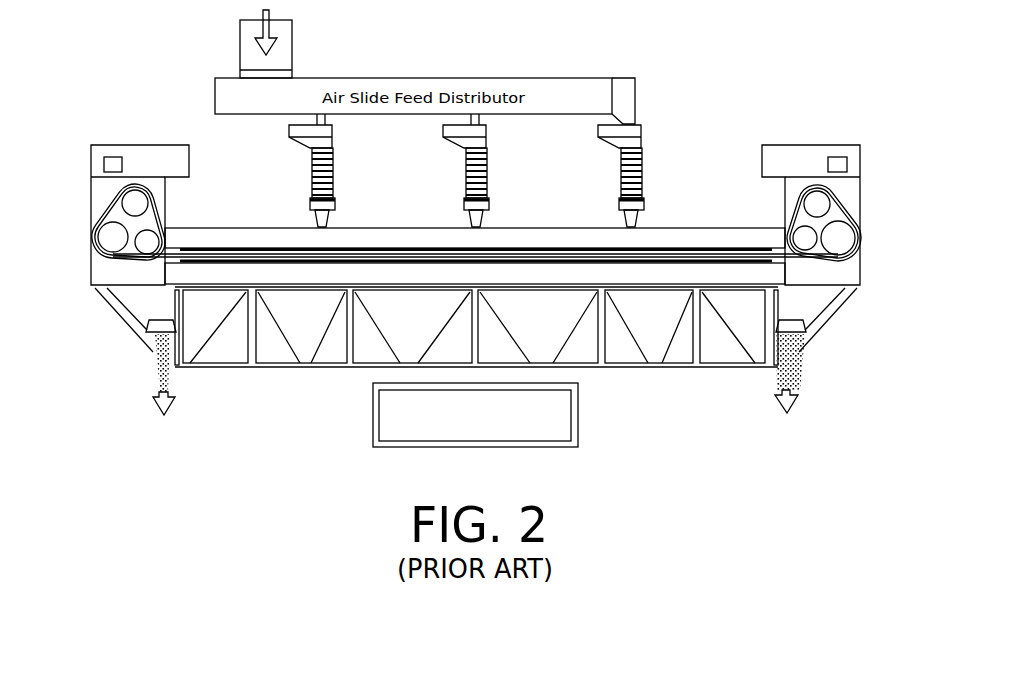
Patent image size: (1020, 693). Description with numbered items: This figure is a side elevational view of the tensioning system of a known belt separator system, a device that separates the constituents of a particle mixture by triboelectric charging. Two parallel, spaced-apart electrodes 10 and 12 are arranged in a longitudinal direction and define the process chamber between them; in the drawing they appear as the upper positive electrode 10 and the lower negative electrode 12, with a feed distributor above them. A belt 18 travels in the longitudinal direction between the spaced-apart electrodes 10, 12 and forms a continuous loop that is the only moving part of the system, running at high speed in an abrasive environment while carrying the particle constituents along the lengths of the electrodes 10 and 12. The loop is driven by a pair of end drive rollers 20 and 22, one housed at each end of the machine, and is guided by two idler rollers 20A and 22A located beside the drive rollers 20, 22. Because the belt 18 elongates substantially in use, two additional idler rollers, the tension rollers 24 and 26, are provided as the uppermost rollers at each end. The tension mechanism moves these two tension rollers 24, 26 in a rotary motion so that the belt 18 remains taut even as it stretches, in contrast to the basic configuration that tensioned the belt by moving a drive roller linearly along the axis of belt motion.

The electrode 10 is at (665, 235).
The electrode 12 is at (670, 272).
The belt 18 is at (254, 253).
The drive roller 20 is at (108, 242).
The idler roller 20A is at (145, 245).
The drive roller 22 is at (842, 240).
The idler roller 22A is at (807, 238).
The tension roller 24 is at (135, 198).
The tension roller 26 is at (813, 200).